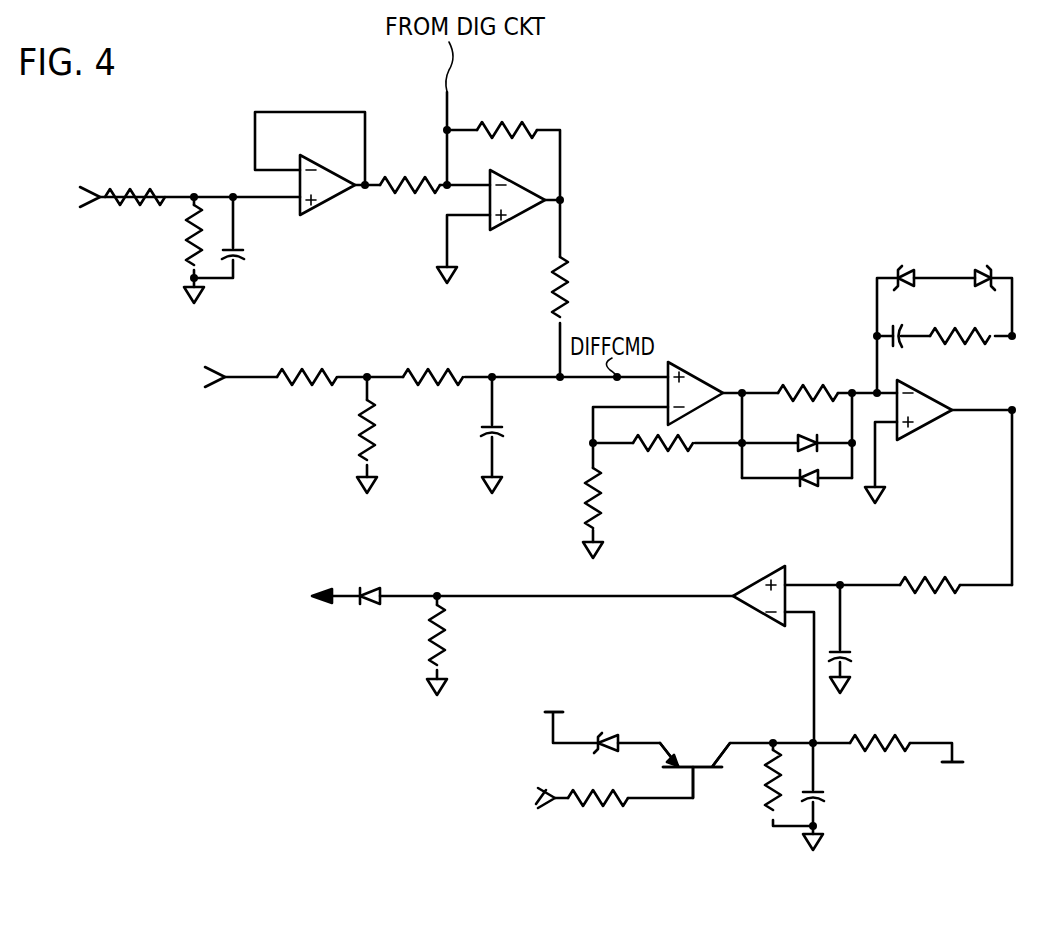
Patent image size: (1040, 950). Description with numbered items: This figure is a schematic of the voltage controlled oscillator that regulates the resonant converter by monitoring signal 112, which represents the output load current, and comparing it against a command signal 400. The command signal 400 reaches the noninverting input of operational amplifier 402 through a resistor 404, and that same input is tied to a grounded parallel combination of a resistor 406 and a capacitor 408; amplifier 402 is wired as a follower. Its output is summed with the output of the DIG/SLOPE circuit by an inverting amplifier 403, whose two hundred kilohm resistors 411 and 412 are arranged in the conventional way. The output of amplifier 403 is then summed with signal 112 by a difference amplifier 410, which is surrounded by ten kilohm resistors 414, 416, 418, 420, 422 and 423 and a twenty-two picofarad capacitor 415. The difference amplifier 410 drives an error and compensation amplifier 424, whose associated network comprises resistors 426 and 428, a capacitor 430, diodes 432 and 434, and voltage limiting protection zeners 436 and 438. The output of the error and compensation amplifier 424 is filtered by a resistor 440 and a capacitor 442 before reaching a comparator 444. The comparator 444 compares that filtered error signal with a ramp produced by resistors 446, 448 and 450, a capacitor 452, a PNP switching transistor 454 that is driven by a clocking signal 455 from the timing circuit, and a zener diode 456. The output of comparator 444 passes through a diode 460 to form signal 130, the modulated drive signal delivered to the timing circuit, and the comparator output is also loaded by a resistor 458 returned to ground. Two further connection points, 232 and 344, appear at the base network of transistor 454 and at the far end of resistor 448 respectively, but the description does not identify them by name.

The command signal 400 is at (96, 189).
The resistor 404 is at (138, 188).
The capacitor 408 is at (186, 256).
The resistor 406 is at (244, 254).
The operational amplifier 402 is at (336, 204).
The resistor 411 is at (402, 178).
The resistor 412 is at (505, 124).
The inverting amplifier 403 is at (512, 226).
The resistor 420 is at (568, 283).
The signal 112 is at (220, 366).
The resistor 416 is at (302, 371).
The resistor 414 is at (426, 371).
The resistor 418 is at (358, 448).
The capacitor 415 is at (488, 425).
The difference amplifier 410 is at (698, 378).
The resistor 426 is at (796, 387).
The diode 432 is at (810, 434).
The diode 434 is at (812, 488).
The resistor 423 is at (660, 454).
The resistor 422 is at (587, 498).
The error and compensation amplifier 424 is at (932, 430).
The voltage limiting protection zener 436 is at (900, 271).
The voltage limiting protection zener 438 is at (986, 271).
The capacitor 430 is at (904, 330).
The resistor 428 is at (956, 345).
The comparator 444 is at (760, 581).
The resistor 440 is at (926, 582).
The capacitor 442 is at (850, 654).
The diode 460 is at (372, 590).
The signal 130 is at (301, 596).
The resistor 458 is at (446, 633).
The input terminal 232 is at (550, 712).
The zener diode 456 is at (604, 738).
The PNP switching transistor 454 is at (684, 764).
The resistor 448 is at (872, 740).
The resistor 446 is at (768, 804).
The capacitor 452 is at (822, 795).
The input terminal 344 is at (954, 766).
The clocking signal 455 is at (556, 807).
The resistor 450 is at (598, 808).